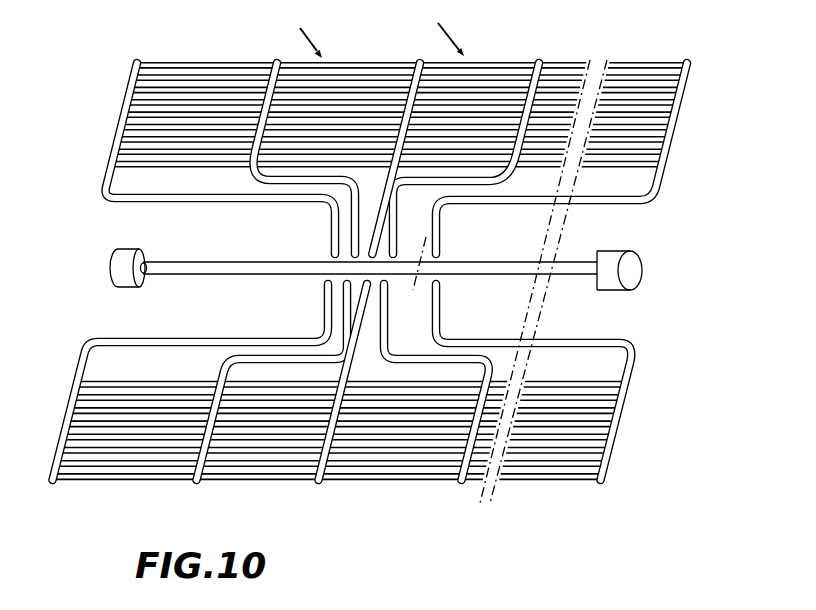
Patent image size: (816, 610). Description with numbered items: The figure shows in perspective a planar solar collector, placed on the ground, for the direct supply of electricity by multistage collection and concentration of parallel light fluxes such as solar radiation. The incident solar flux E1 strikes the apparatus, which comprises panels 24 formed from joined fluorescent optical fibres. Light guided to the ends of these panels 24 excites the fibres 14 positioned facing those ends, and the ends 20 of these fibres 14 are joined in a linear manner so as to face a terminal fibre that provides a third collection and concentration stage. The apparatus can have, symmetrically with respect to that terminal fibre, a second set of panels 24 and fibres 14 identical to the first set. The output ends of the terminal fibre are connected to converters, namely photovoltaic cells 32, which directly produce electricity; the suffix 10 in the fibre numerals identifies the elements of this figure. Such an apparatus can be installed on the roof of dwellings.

The fibres 14.10 (suffix of compound numeral) 10 is at (389, 279).
The fibres 14 is at (135, 62).
The panels 24 is at (300, 62).
The photovoltaic cells 32 is at (130, 252).
The ends of the fibres 20 is at (447, 302).
The incident solar flux E1 is at (180, 50).